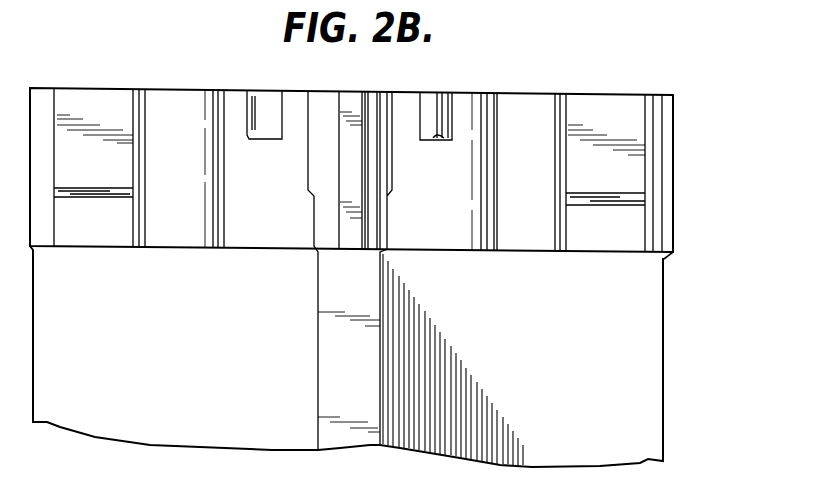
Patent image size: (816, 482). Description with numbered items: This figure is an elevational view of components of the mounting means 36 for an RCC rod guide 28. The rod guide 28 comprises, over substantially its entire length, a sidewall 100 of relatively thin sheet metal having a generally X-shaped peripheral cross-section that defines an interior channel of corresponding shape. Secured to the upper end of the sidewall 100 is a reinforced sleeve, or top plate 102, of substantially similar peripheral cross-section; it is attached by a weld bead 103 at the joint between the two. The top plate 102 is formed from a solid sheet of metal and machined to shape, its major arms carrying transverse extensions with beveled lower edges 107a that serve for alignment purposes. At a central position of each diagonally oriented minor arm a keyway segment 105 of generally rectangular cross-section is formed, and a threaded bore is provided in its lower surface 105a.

The mounting means 36 is at (188, 70).
The top plate 102 is at (680, 114).
The weld bead 103 is at (672, 262).
The sidewall 100 is at (663, 334).
The RCC rod guide 28 is at (683, 401).
The keyway segment 105 is at (437, 97).
The lower surface 105a is at (445, 138).
The beveled lower edges 107a is at (96, 194).